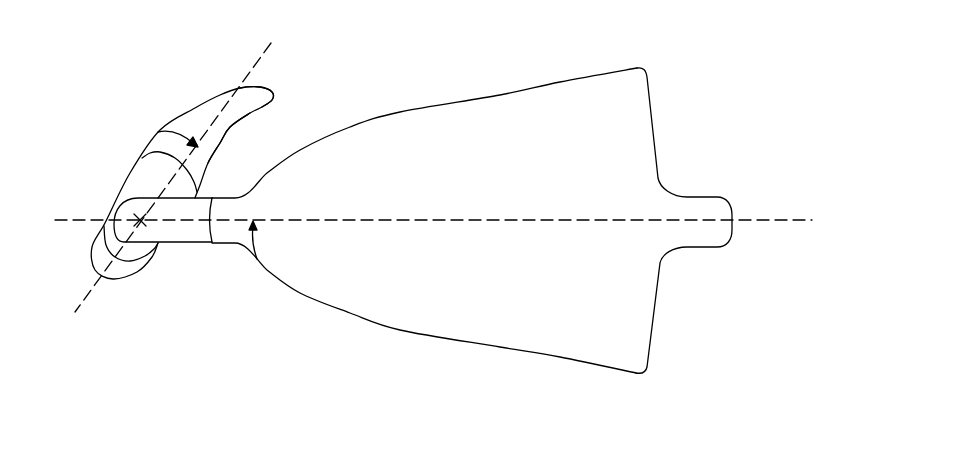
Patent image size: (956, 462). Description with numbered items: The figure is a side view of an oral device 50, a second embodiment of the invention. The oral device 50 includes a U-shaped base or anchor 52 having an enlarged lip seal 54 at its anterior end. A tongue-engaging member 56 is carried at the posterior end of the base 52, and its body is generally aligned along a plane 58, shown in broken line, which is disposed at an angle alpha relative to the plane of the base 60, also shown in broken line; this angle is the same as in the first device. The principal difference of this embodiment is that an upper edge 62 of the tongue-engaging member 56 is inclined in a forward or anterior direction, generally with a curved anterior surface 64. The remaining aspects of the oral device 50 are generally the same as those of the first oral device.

The oral device 50 is at (636, 45).
The U-shaped base 52 is at (393, 308).
The enlarged lip seal 54 is at (657, 303).
The tongue-engaging member 56 is at (147, 259).
The plane 58 is at (220, 97).
The plane of the base 60 is at (480, 218).
The upper edge 62 is at (263, 93).
The curved anterior surface 64 is at (228, 132).